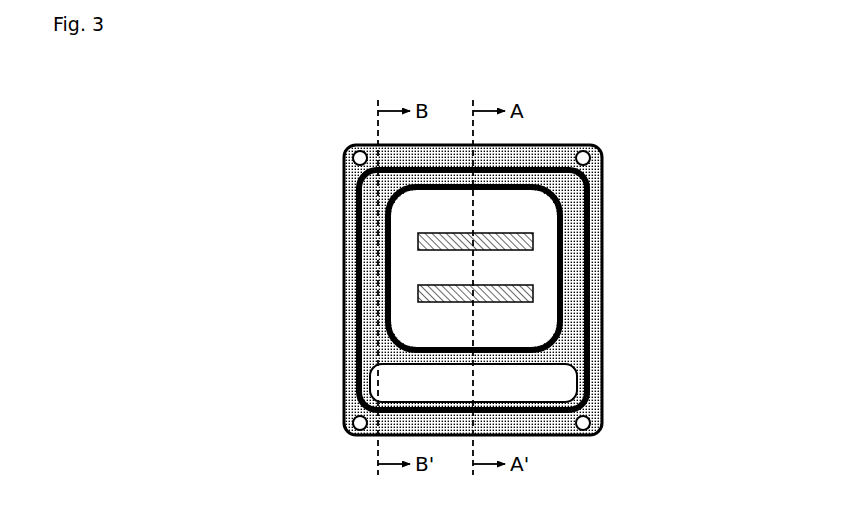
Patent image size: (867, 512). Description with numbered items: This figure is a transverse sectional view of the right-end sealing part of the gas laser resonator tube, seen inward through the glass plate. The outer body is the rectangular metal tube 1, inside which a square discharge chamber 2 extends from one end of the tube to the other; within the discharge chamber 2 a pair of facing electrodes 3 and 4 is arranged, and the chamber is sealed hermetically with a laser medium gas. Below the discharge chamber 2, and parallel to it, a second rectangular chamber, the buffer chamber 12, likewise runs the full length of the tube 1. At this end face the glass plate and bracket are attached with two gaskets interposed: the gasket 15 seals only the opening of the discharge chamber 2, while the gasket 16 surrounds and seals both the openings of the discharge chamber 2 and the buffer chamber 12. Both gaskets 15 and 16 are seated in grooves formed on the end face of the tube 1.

The rectangular metal tube 1 is at (567, 143).
The discharge chamber 2 is at (522, 324).
The electrode 3 is at (417, 242).
The electrode 4 is at (418, 293).
The buffer chamber 12 is at (543, 380).
The gasket 15 is at (562, 273).
The gasket 16 is at (588, 207).